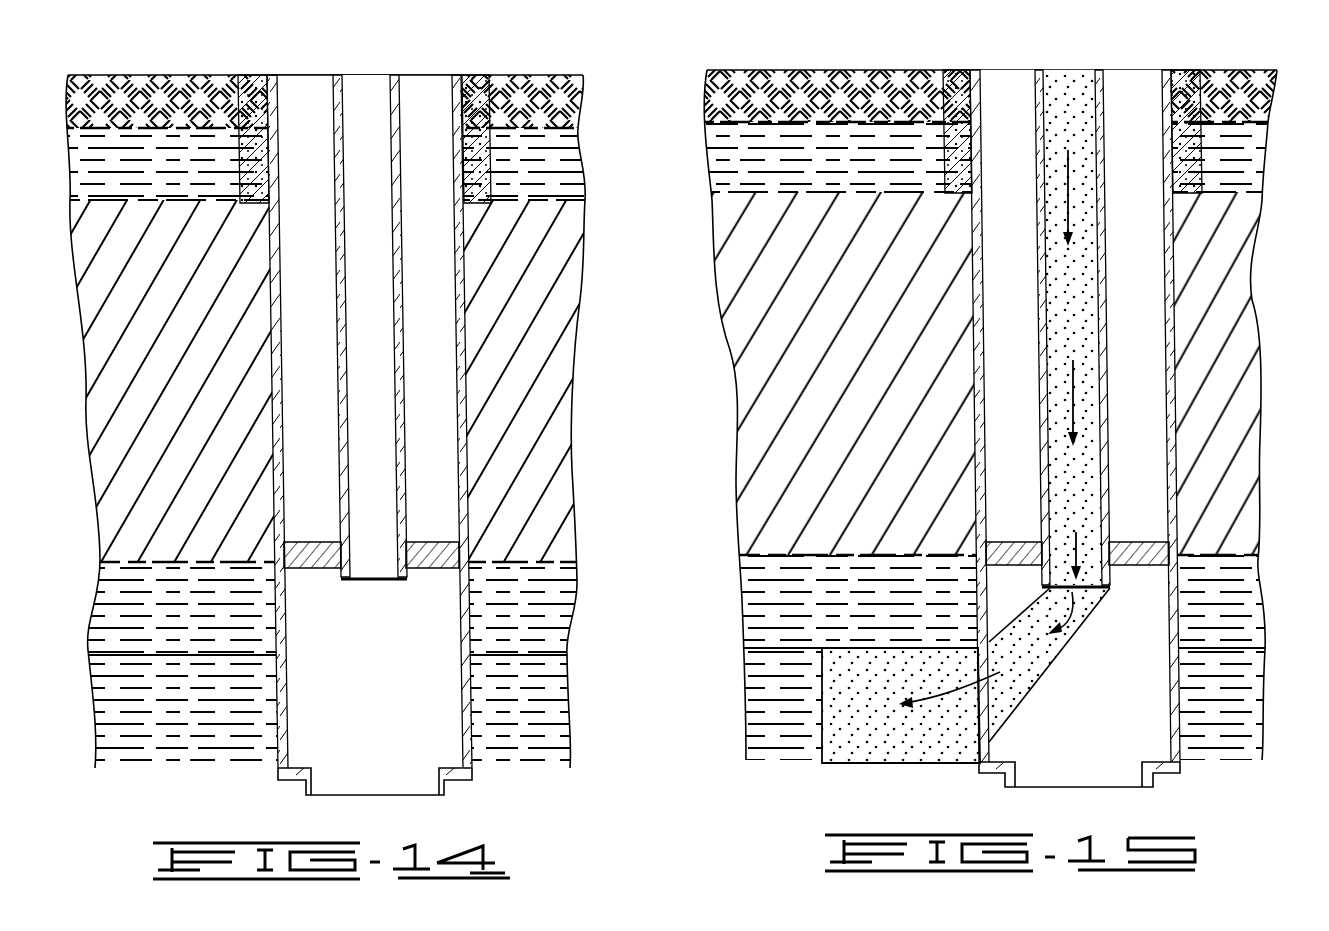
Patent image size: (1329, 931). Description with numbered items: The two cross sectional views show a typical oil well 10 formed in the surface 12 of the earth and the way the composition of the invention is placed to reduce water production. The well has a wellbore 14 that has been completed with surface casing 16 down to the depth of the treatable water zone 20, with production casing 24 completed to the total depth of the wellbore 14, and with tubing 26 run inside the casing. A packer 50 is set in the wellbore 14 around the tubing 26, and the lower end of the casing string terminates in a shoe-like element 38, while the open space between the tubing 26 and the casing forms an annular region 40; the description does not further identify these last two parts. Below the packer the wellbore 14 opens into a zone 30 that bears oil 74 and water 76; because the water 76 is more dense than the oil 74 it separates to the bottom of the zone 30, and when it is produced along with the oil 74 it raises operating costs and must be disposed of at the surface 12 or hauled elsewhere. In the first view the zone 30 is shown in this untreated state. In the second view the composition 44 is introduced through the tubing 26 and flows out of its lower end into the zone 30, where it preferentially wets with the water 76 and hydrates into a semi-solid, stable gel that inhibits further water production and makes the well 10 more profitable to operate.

In FIG. 14, the oil well 10 is at (268, 72).
In FIG. 14, the surface of the earth 12 is at (527, 72).
In FIG. 15, the surface of the earth 12 is at (838, 70).
In FIG. 14, the wellbore 14 is at (290, 116).
In FIG. 15, the wellbore 14 is at (996, 97).
In FIG. 14, the surface casing 16 is at (490, 199).
In FIG. 15, the surface casing 16 is at (1178, 197).
In FIG. 14, the treatable water zone 20 is at (563, 151).
In FIG. 15, the treatable water zone 20 is at (712, 150).
In FIG. 14, the production casing 24 is at (466, 268).
In FIG. 15, the production casing 24 is at (972, 268).
In FIG. 14, the tubing 26 is at (402, 108).
In FIG. 15, the tubing 26 is at (1105, 100).
In FIG. 14, the zone 30 is at (575, 635).
In FIG. 15, the zone 30 is at (735, 629).
In FIG. 14, the casing shoe 38 is at (408, 795).
In FIG. 15, the casing shoe 38 is at (1125, 788).
In FIG. 14, the annulus 40 is at (455, 333).
In FIG. 15, the annulus 40 is at (972, 326).
In FIG. 15, the composition 44 is at (1056, 80).
In FIG. 14, the packer 50 is at (320, 570).
In FIG. 15, the packer 50 is at (1077, 553).
In FIG. 14, the oil 74 is at (575, 600).
In FIG. 15, the oil 74 is at (735, 568).
In FIG. 14, the water 76 is at (575, 682).
In FIG. 15, the water 76 is at (742, 728).